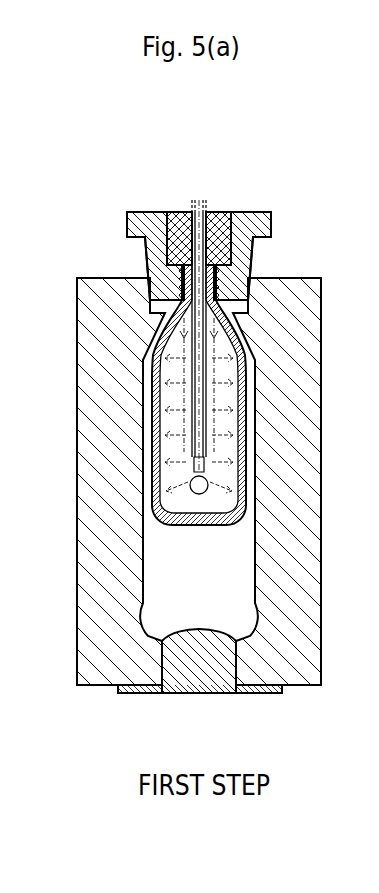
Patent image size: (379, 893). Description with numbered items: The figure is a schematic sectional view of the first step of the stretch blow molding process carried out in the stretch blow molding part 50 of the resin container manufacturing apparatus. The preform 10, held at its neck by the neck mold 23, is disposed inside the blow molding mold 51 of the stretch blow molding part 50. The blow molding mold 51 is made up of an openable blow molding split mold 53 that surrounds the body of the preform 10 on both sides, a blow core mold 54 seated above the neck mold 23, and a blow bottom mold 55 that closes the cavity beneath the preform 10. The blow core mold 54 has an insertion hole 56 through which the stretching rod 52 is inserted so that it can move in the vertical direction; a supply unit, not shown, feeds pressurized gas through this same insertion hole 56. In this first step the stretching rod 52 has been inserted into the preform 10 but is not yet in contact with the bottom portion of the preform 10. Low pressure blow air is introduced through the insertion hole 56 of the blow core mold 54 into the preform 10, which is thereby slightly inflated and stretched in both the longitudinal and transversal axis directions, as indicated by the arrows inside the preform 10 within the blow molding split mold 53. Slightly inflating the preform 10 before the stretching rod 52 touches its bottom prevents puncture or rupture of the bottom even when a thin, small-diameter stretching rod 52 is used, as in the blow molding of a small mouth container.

The preform 10 is at (244, 364).
The neck mold 23 is at (148, 262).
The stretch blow molding part 50 is at (313, 166).
The blow molding mold 51 is at (330, 290).
The stretching rod 52 is at (192, 424).
The blow molding split mold 53 is at (92, 640).
The blow core mold 54 is at (219, 212).
The blow bottom mold 55 is at (180, 684).
The insertion hole 56 is at (189, 212).